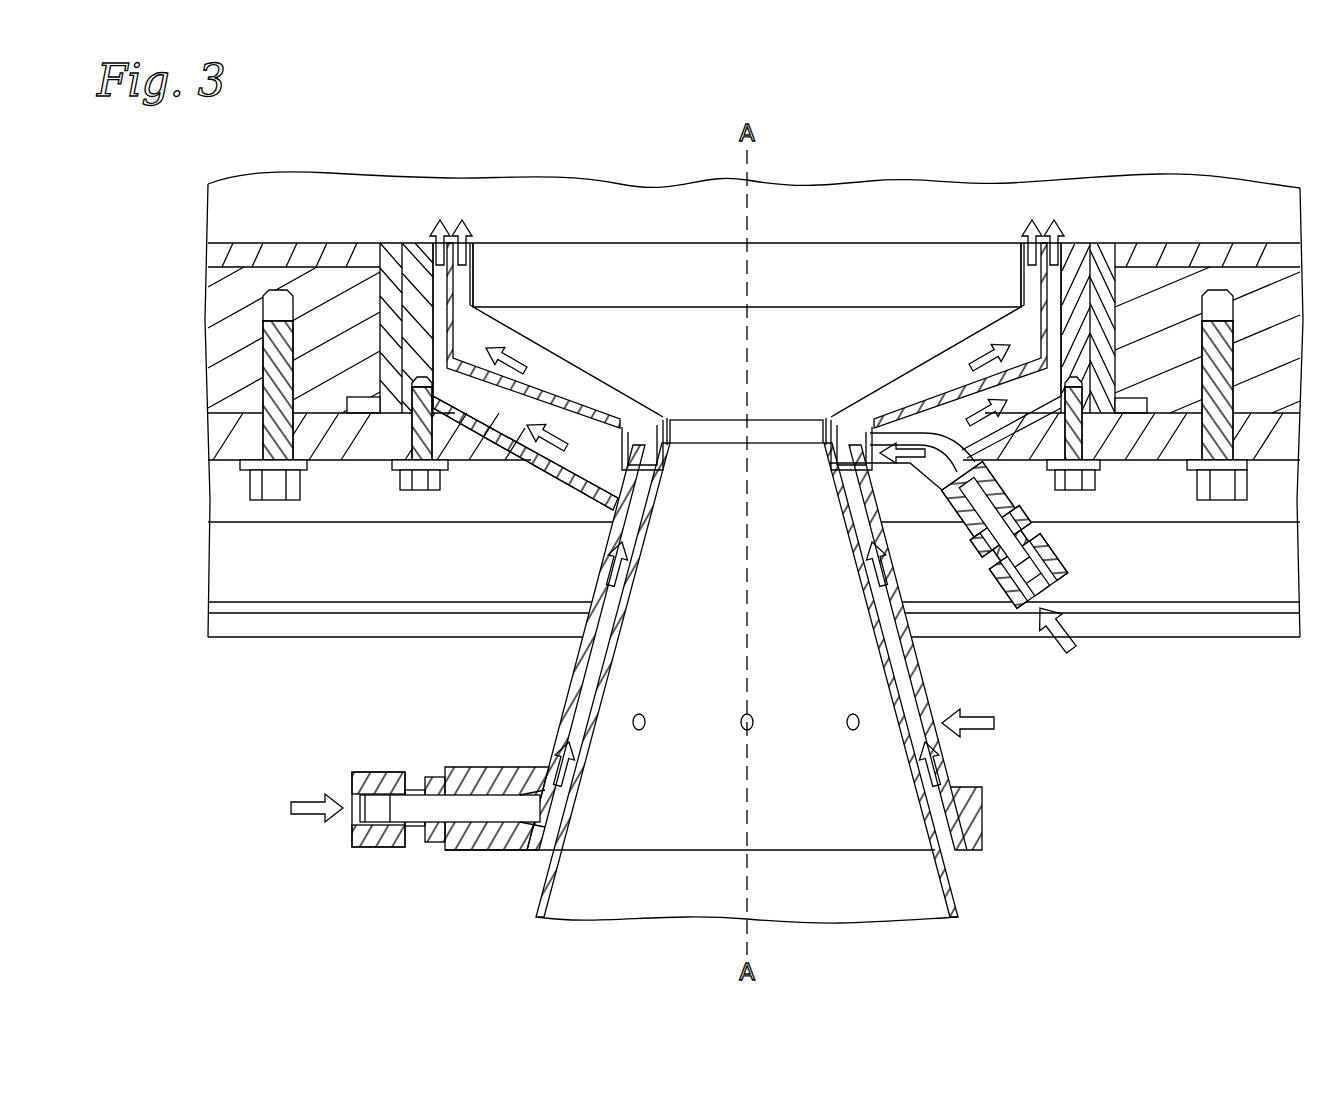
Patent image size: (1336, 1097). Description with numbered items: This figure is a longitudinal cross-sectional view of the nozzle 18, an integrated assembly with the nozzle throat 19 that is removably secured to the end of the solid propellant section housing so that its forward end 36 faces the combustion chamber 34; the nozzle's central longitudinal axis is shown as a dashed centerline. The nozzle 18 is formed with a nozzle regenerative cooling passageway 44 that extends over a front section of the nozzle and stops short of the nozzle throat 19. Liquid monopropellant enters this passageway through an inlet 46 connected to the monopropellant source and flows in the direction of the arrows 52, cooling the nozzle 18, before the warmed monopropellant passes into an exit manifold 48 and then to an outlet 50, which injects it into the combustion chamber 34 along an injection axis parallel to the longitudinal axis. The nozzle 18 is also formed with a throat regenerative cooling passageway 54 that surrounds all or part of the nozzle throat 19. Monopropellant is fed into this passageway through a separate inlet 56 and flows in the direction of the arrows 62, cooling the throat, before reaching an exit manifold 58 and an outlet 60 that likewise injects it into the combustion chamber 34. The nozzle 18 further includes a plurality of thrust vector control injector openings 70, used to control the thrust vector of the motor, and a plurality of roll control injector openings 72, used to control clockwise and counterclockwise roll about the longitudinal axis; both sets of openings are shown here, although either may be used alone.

The nozzle 18 is at (1052, 831).
The nozzle throat 19 is at (640, 527).
The combustion chamber 34 is at (816, 200).
The forward end 36 is at (1078, 262).
The nozzle regenerative cooling passageway 44 is at (592, 698).
The inlet 46 is at (382, 852).
The exit manifold 48 is at (588, 460).
The outlet 50 is at (440, 222).
The arrows 52 is at (440, 240).
The throat regenerative cooling passageway 54 is at (670, 420).
The inlet 56 is at (1067, 570).
The exit manifold 58 is at (560, 382).
The outlet 60 is at (471, 300).
The arrows 62 is at (462, 258).
The thrust vector control injector openings 70 is at (745, 731).
The roll control injector openings 72 is at (639, 731).